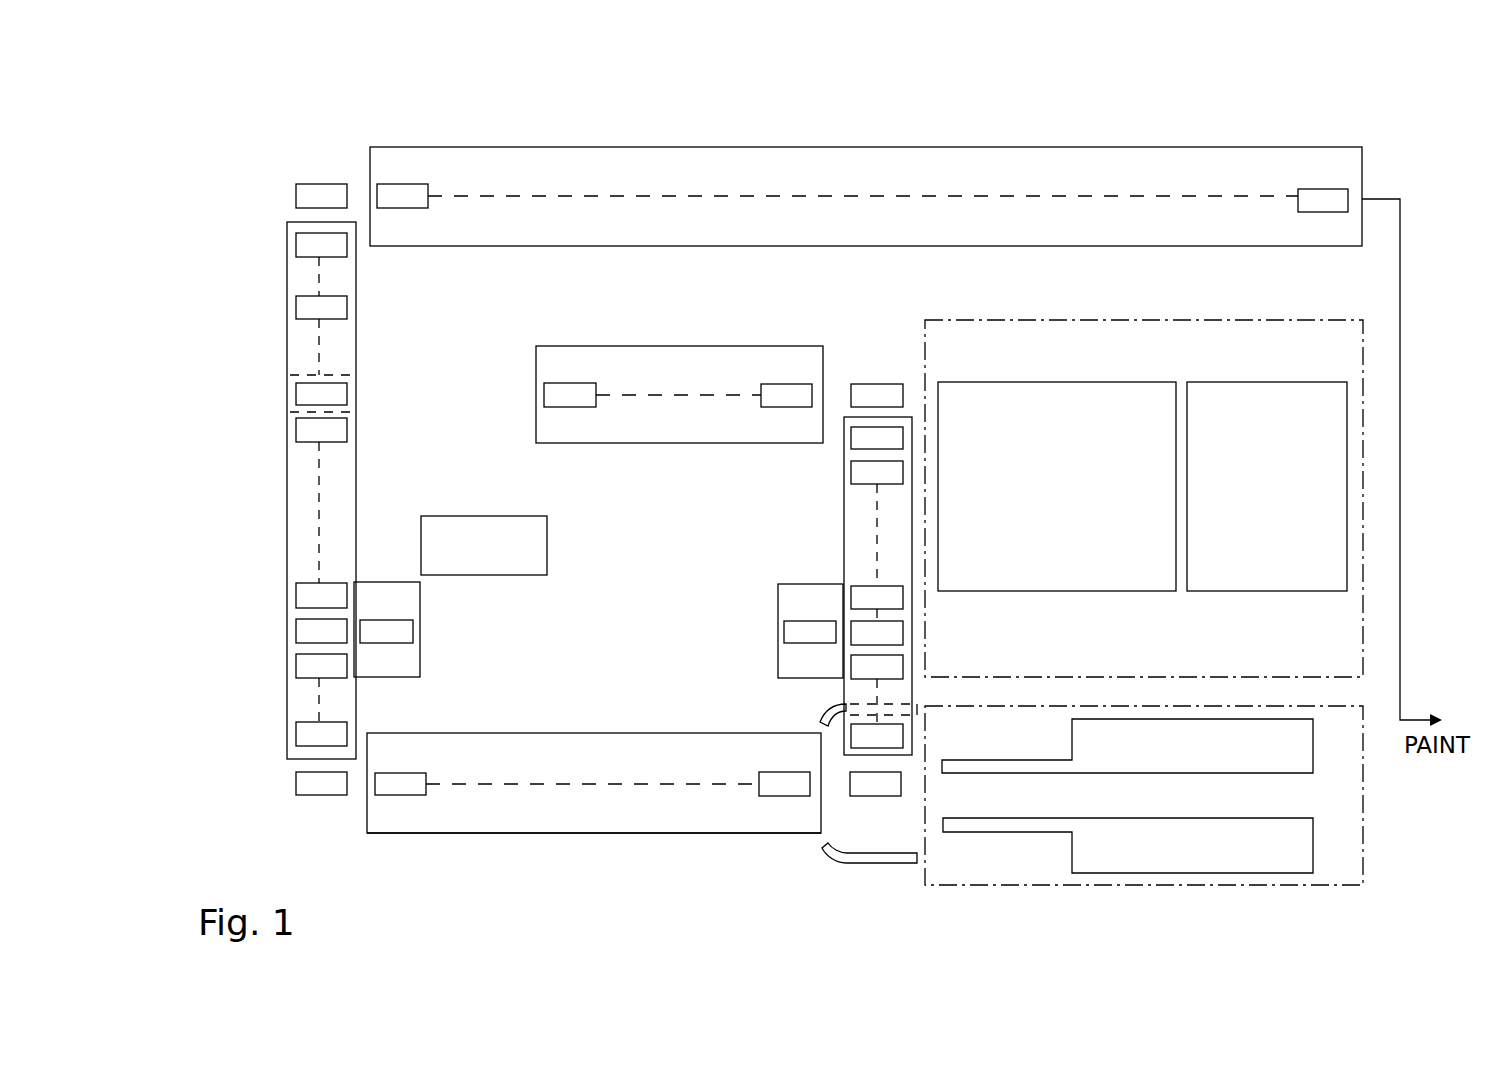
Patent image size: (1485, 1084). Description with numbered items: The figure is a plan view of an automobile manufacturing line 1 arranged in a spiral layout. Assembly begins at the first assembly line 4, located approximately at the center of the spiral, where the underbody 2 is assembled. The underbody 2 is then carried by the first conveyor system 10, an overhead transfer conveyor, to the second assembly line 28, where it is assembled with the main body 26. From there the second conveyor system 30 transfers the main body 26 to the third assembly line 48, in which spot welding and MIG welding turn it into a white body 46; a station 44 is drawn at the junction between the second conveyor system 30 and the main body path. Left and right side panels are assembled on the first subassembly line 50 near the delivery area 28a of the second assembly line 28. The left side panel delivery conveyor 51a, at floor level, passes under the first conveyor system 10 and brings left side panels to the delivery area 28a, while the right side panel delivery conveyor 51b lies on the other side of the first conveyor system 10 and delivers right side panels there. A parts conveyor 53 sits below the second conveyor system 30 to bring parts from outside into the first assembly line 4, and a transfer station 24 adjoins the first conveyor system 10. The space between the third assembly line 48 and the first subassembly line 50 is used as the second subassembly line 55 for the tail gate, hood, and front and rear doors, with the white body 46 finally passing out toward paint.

The automobile manufacturing line 1 is at (468, 140).
The underbody 2 is at (853, 390).
The first assembly line 4 is at (537, 372).
The first conveyor system 10 is at (843, 520).
The transfer station 24 is at (777, 603).
The main body 26 is at (398, 192).
The second assembly line 28 is at (595, 818).
The delivery area 28a is at (741, 815).
The second conveyor system 30 is at (287, 470).
The transfer station 44 is at (382, 578).
The white body 46 is at (1330, 190).
The third assembly line 48 is at (1025, 150).
The first subassembly line 50 is at (1353, 865).
The left side panel delivery conveyor 51a is at (822, 712).
The right side panel delivery conveyor 51b is at (858, 863).
The parts conveyor 53 is at (537, 533).
The tail-gate/hood/door station 55 is at (1357, 354).